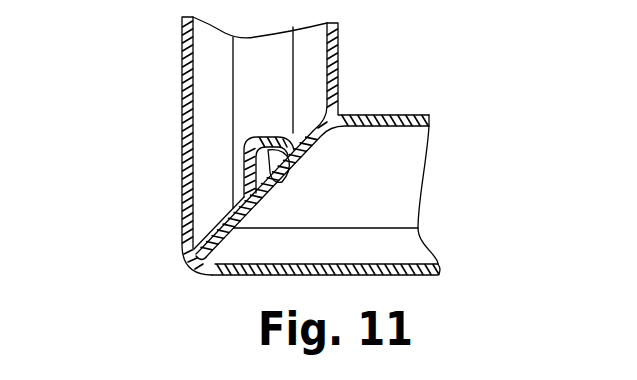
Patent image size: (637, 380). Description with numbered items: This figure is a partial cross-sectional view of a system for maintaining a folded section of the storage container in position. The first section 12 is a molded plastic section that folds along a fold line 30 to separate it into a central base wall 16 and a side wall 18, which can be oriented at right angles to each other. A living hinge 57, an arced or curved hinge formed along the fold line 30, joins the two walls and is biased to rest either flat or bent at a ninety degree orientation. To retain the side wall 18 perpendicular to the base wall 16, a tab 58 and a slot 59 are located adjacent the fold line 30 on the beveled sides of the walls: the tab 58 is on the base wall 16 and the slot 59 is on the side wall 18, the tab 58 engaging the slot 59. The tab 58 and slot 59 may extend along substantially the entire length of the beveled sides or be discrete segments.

The first section 12 is at (201, 146).
The central base wall 16 is at (405, 114).
The side wall 18 is at (182, 132).
The fold line 30 is at (194, 258).
The living hinge 57 is at (197, 257).
The tab 58 is at (287, 174).
The slot 59 is at (254, 136).